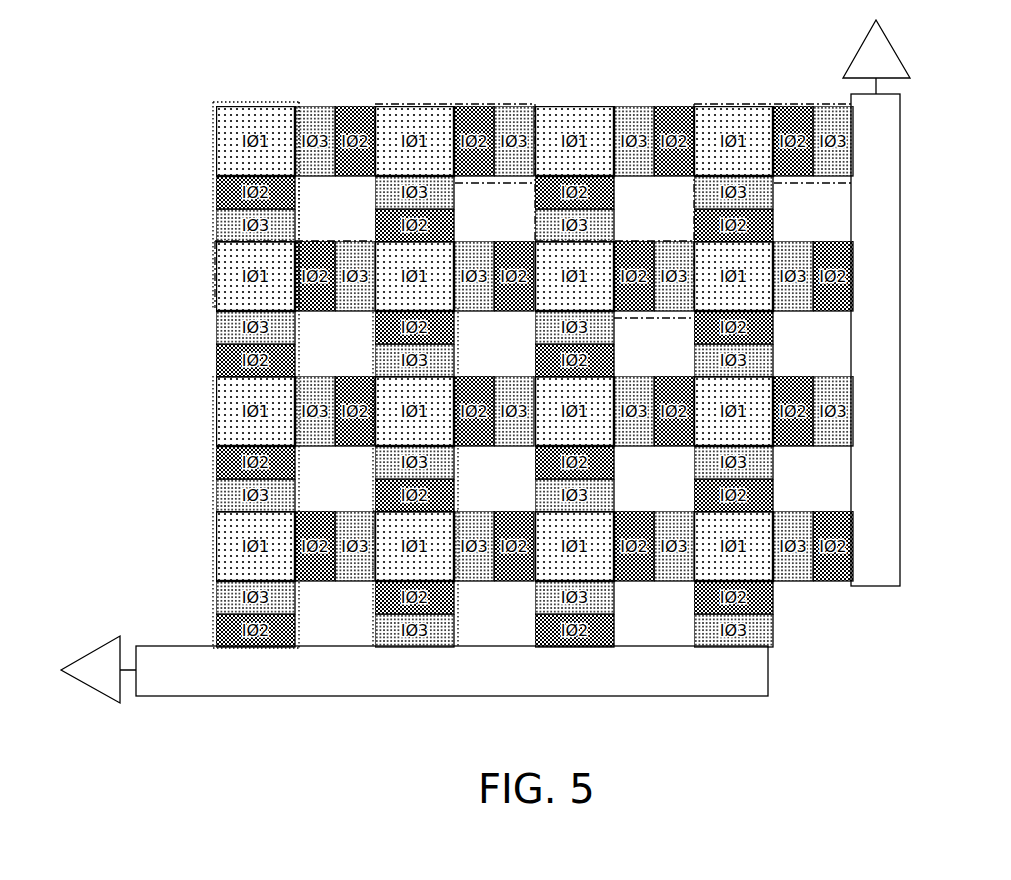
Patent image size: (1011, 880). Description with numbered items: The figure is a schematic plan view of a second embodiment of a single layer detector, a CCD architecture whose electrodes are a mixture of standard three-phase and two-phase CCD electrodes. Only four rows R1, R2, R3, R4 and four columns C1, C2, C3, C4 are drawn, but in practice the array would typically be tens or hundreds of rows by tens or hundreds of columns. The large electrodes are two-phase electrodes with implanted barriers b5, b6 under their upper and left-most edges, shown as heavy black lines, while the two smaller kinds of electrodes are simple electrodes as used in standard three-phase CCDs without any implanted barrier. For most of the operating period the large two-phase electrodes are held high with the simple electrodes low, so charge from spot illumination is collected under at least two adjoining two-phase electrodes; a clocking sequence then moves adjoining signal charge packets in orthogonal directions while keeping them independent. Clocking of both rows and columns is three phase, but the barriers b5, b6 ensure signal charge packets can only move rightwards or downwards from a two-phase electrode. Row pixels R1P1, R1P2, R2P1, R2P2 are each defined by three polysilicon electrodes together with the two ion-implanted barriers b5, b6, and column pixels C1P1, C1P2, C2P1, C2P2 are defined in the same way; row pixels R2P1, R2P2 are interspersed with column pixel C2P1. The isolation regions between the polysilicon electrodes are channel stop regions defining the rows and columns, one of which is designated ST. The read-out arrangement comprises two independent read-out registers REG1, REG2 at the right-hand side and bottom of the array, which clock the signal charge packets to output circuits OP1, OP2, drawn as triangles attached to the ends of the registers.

The row R1 is at (843, 116).
The row R2 is at (843, 254).
The row R3 is at (843, 390).
The row R4 is at (843, 518).
The column C1 is at (268, 640).
The column C2 is at (430, 640).
The column C3 is at (590, 640).
The column C4 is at (745, 640).
The read-out register REG1 is at (878, 176).
The read-out register REG2 is at (163, 665).
The output circuit OP1 is at (878, 52).
The output circuit OP2 is at (90, 657).
The implanted barrier b5 is at (217, 94).
The implanted barrier b6 is at (207, 148).
The column pixel C1P1 is at (255, 94).
The column pixel C1P2 is at (207, 452).
The column pixel C2P1 is at (365, 322).
The column pixel C2P2 is at (365, 515).
The row pixel R1P1 is at (447, 95).
The row pixel R1P2 is at (783, 96).
The row pixel R2P1 is at (207, 262).
The row pixel R2P2 is at (625, 232).
The channel stop region ST is at (645, 186).